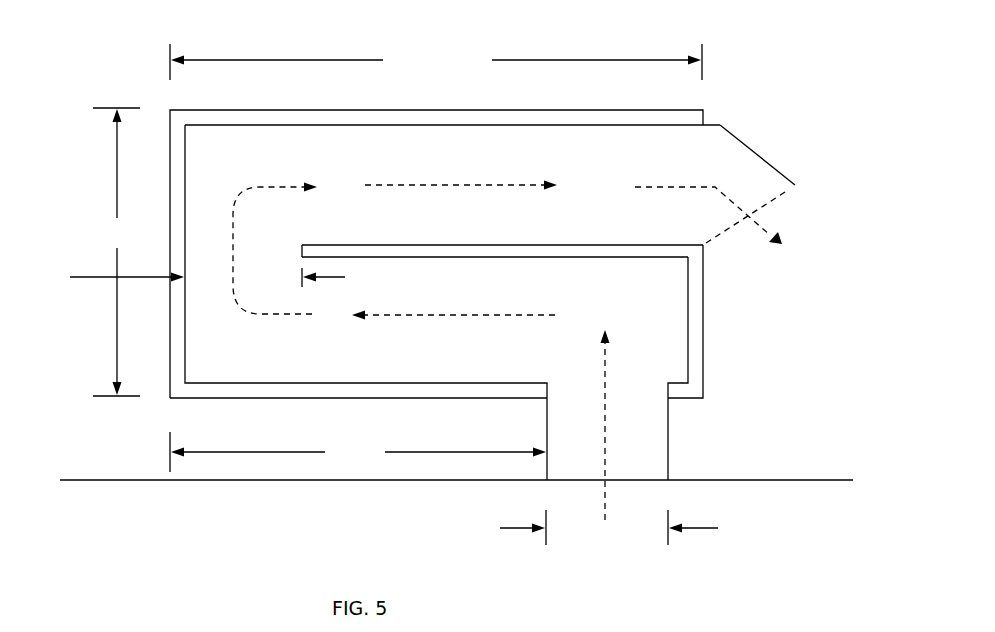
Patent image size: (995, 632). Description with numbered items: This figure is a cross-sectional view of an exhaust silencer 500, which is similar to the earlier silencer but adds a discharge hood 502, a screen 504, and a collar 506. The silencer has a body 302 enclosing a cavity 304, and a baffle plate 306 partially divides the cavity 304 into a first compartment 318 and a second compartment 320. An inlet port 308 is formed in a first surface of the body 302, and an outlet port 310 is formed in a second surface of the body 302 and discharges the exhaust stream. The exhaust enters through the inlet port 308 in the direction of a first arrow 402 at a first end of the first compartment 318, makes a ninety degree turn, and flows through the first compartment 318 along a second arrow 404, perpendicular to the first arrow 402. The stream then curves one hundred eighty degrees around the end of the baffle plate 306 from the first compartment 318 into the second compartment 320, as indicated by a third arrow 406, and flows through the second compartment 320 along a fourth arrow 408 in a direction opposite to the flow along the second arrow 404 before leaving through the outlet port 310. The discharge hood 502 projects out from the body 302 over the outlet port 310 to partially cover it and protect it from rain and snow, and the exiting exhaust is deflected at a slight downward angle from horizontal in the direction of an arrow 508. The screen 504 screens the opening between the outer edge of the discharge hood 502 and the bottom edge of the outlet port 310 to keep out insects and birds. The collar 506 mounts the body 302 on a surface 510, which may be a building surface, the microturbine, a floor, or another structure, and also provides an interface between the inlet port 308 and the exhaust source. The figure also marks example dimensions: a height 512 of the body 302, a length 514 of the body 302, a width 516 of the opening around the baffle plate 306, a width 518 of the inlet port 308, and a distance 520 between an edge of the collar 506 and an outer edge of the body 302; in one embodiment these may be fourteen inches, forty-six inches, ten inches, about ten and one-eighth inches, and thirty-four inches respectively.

The exhaust silencer 500 is at (80, 30).
The body 302 is at (170, 108).
The cavity 304 is at (203, 372).
The baffle plate 306 is at (515, 260).
The inlet port 308 is at (642, 402).
The outlet port 310 is at (718, 170).
The first compartment 318 is at (338, 356).
The second compartment 320 is at (338, 153).
The first arrow 402 is at (605, 512).
The second arrow 404 is at (497, 317).
The third arrow 406 is at (288, 185).
The fourth arrow 408 is at (505, 185).
The discharge hood 502 is at (732, 133).
The screen 504 is at (765, 207).
The collar 506 is at (545, 466).
The arrow 508 is at (768, 235).
The surface 510 is at (784, 475).
The height 512 is at (116, 252).
The length 514 is at (436, 62).
The width 516 is at (95, 280).
The width 518 is at (697, 522).
The distance 520 is at (358, 452).